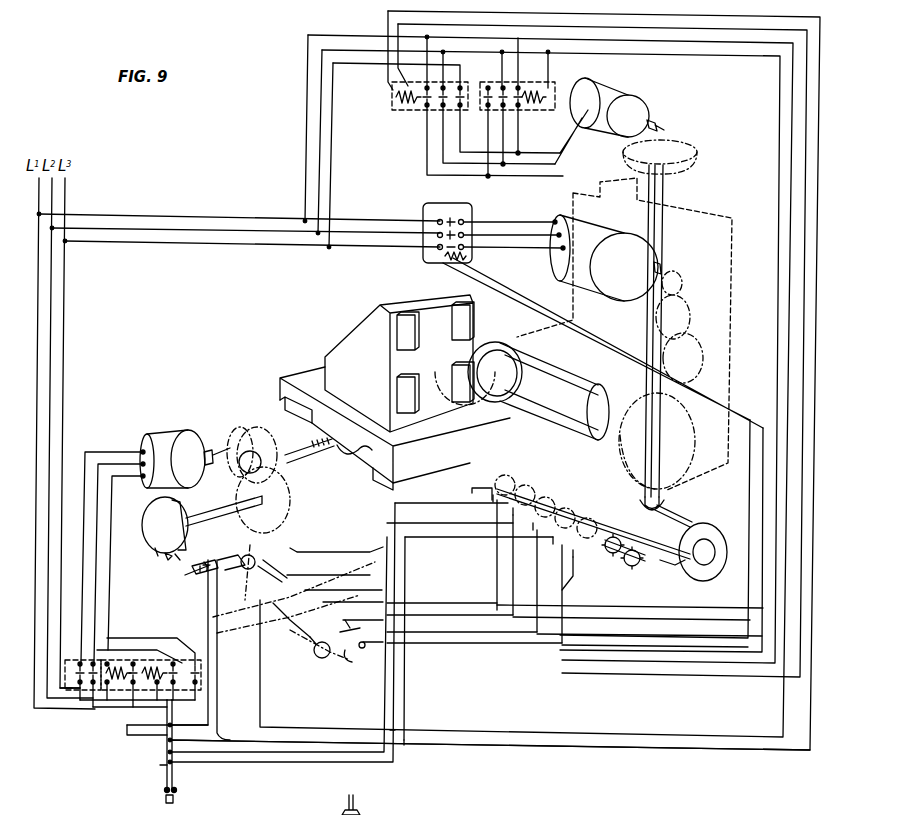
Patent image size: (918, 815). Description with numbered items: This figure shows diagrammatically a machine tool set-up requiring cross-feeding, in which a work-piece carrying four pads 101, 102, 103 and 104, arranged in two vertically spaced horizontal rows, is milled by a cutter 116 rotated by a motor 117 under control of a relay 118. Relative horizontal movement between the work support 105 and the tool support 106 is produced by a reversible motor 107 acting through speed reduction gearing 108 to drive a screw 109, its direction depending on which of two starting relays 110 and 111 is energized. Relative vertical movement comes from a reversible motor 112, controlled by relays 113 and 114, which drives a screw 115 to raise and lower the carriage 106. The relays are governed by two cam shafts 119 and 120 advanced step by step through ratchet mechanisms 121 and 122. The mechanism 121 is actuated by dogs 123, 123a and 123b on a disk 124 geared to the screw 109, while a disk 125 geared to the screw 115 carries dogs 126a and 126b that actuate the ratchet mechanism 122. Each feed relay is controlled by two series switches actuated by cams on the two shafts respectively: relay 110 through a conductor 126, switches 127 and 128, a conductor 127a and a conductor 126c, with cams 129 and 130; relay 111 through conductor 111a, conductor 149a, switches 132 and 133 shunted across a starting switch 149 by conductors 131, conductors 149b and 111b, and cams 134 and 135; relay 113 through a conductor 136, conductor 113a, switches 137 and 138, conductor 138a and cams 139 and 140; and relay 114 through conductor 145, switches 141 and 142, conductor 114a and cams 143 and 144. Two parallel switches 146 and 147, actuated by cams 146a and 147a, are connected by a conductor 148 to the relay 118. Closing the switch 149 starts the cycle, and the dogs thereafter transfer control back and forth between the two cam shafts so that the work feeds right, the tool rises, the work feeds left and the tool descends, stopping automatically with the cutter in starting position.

The pad 101 is at (470, 352).
The pad 102 is at (392, 392).
The pad 103 is at (405, 320).
The pad 104 is at (470, 330).
The work support 105 is at (312, 376).
The tool support 106 is at (733, 268).
The reversible motor 107 is at (172, 440).
The speed reduction gearing 108 is at (228, 478).
The screw 109 is at (295, 458).
The starting relay 110 is at (68, 700).
The starting relay 111 is at (203, 700).
The conductor 111a is at (110, 700).
The conductor 111b is at (95, 712).
The reversible motor 112 is at (612, 88).
The relay 113 is at (545, 112).
The conductor 113a is at (552, 56).
The relay 114 is at (402, 112).
The conductor 114a is at (388, 18).
The screw 115 is at (670, 176).
The cutter 116 is at (530, 345).
The cutter drive motor 117 is at (556, 262).
The relay 118 is at (423, 210).
The cam shaft 119 is at (222, 560).
The cam shaft 120 is at (595, 568).
The ratchet mechanism 121 is at (207, 588).
The ratchet mechanism 122 is at (652, 571).
The dog 123 is at (170, 566).
The dog 123a is at (165, 573).
The dog 123b is at (158, 560).
The disk 124 is at (148, 518).
The disk 125 is at (722, 548).
The conductor 126 is at (125, 735).
The dog 126a is at (685, 566).
The dog 126b is at (665, 513).
The conductor 126c is at (410, 692).
The switch 127 is at (305, 582).
The conductor 127a is at (400, 555).
The switch 128 is at (480, 512).
The cam 129 is at (278, 592).
The cam 130 is at (530, 486).
The conductor 131 is at (201, 752).
The switch 132 is at (290, 552).
The switch 133 is at (472, 488).
The cam 134 is at (258, 556).
The cam 135 is at (508, 473).
The conductor 136 is at (562, 600).
The switch 137 is at (570, 566).
The switch 138 is at (350, 624).
The conductor 138a is at (592, 733).
The cam 139 is at (592, 530).
The cam 140 is at (314, 654).
The switch 141 is at (500, 560).
The switch 142 is at (320, 598).
The cam 143 is at (571, 512).
The cam 144 is at (270, 617).
The conductor 145 is at (497, 590).
The switch 146 is at (363, 654).
The cam 146a is at (320, 660).
The switch 147 is at (497, 540).
The cam 147a is at (550, 500).
The conductor 148 is at (700, 422).
The switch 149 is at (157, 797).
The conductor 149a is at (174, 780).
The conductor 149b is at (160, 785).